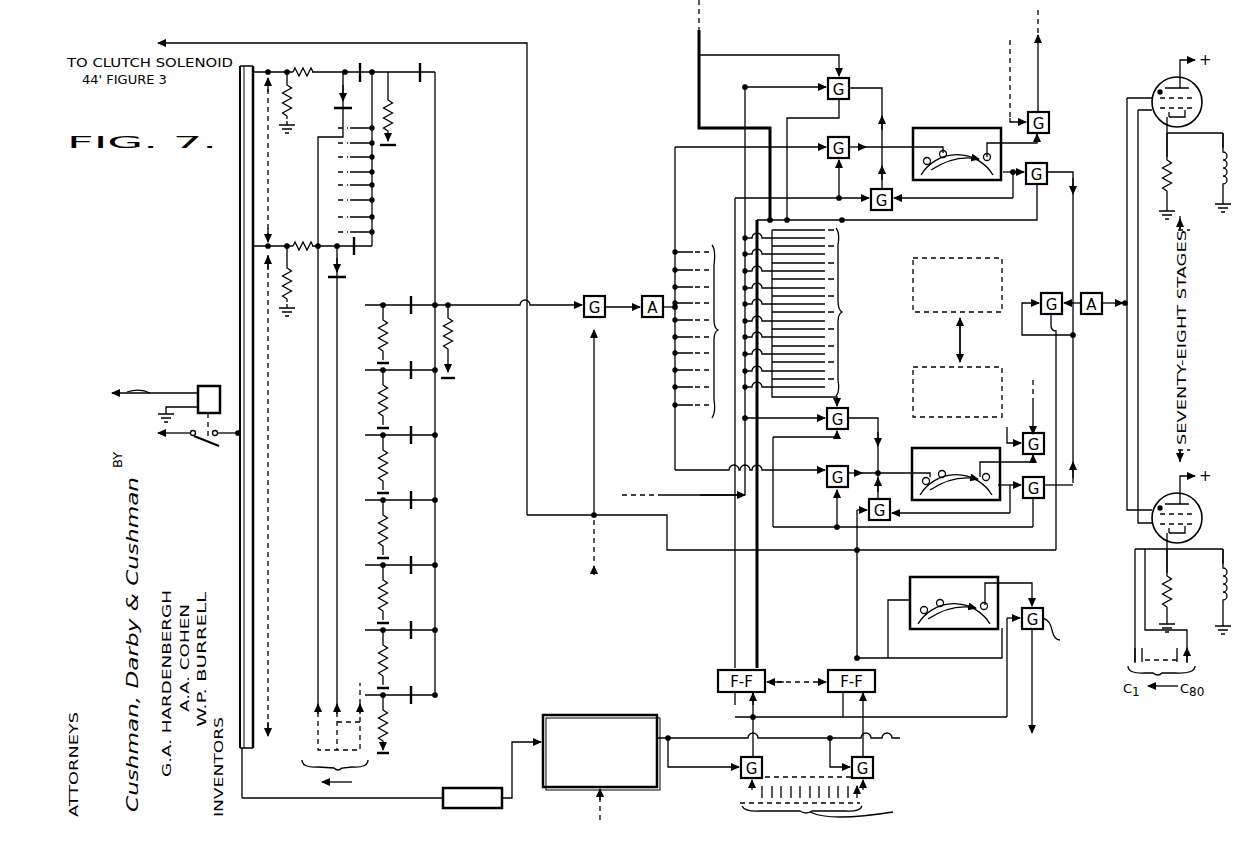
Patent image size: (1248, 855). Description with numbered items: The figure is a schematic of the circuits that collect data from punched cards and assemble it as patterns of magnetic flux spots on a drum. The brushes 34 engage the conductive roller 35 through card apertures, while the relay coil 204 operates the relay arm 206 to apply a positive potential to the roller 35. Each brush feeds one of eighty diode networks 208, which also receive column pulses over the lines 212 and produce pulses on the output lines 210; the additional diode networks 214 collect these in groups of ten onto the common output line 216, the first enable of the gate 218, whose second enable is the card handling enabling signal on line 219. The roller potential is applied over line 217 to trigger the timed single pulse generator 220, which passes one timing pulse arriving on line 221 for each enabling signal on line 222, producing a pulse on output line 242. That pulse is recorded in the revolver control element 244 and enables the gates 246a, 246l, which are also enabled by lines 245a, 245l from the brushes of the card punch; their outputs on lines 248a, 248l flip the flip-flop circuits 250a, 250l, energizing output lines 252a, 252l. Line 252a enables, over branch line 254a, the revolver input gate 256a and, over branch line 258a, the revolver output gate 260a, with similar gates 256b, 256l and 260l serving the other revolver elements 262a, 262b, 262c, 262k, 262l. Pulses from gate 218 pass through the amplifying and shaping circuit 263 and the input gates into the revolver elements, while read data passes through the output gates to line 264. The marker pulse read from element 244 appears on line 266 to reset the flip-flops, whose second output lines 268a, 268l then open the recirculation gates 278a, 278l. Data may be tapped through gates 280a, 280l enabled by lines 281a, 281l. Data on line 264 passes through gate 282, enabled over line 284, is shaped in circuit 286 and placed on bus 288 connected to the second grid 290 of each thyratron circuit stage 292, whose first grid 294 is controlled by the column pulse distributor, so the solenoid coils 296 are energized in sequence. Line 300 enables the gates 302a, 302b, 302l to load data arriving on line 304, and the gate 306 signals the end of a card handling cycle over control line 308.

The brushes 34 is at (256, 68).
The conductive roller 35 is at (240, 228).
The relay coil 204 is at (206, 386).
The relay arm 206 is at (205, 446).
The diode networks 208 is at (294, 108).
The output lines 210 is at (360, 62).
The lines 212 is at (318, 185).
The additional diode networks 214 is at (410, 88).
The common output line 216 is at (492, 306).
The line 217 is at (342, 798).
The gate 218 is at (592, 296).
The line 219 is at (595, 395).
The timed single pulse generator 220 is at (562, 715).
The line 221 is at (601, 803).
The line 222 is at (510, 752).
The output line 242 is at (716, 737).
The revolver control element 244 is at (928, 577).
The line 245a is at (748, 787).
The line 245l is at (866, 788).
The gate 246a is at (740, 762).
The gate 246l is at (873, 768).
The line 248a is at (756, 724).
The line 248l is at (892, 737).
The flip-flop circuit 250a is at (723, 668).
The flip-flop circuit 250l is at (834, 668).
The output line 252a is at (757, 610).
The output line 252l is at (862, 580).
The branch line 254a is at (832, 196).
The revolver input gate 256a is at (828, 145).
The revolver input gate 256b is at (703, 317).
The revolver input gate 256l is at (822, 470).
The branch line 258a is at (1037, 212).
The revolver output gate 260a is at (1050, 175).
The revolver output gate 260l is at (1036, 498).
The revolver element 262a is at (922, 128).
The revolver element 262b is at (915, 262).
The revolver element 262c is at (924, 340).
The revolver element 262k is at (972, 367).
The revolver element 262l is at (940, 448).
The amplifying and shaping circuit 263 is at (660, 297).
The line 264 is at (1073, 248).
The line 266 is at (1020, 595).
The second output line 268a is at (734, 600).
The second output line 268l is at (838, 565).
The recirculation gate 278a is at (892, 207).
The recirculation gate 278l is at (837, 520).
The gate 280a is at (1045, 112).
The gate 280l is at (1044, 443).
The line 281a is at (1009, 86).
The line 281l is at (1007, 427).
The gate 282 is at (1048, 320).
The line 284 is at (1057, 372).
The amplifying and shaping circuit 286 is at (1088, 316).
The bus 288 is at (1124, 385).
The second grid 290 is at (1130, 97).
The thyratron circuit stages 292 is at (1198, 100).
The first grid 294 is at (1140, 115).
The solenoid coils 296 is at (1222, 160).
The line 300 is at (648, 495).
The gate 302a is at (845, 75).
The gate 302b is at (824, 317).
The gate 302l is at (840, 406).
The line 304 is at (698, 40).
The gate 306 is at (1062, 636).
The control line 308 is at (1032, 728).